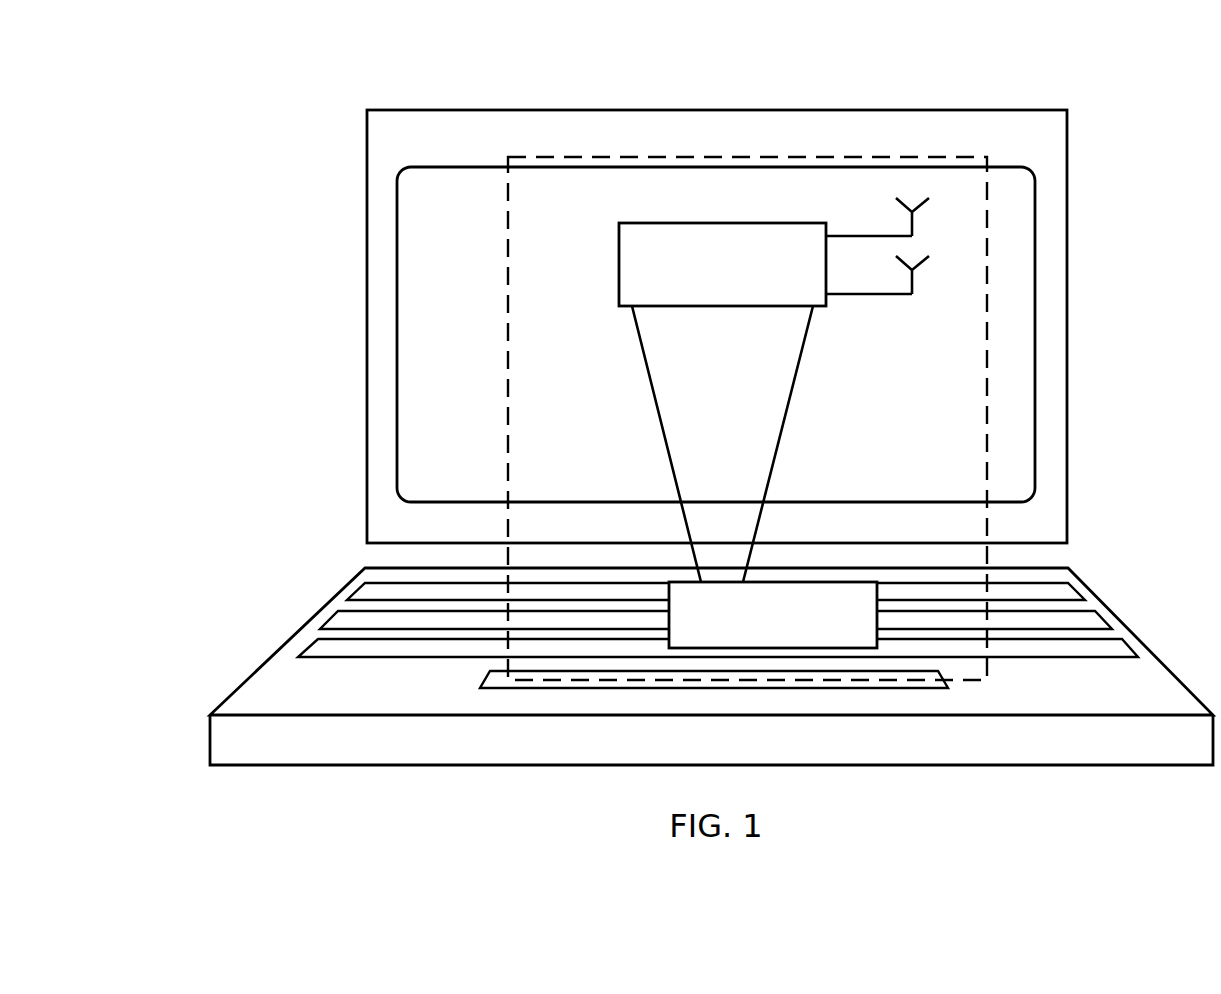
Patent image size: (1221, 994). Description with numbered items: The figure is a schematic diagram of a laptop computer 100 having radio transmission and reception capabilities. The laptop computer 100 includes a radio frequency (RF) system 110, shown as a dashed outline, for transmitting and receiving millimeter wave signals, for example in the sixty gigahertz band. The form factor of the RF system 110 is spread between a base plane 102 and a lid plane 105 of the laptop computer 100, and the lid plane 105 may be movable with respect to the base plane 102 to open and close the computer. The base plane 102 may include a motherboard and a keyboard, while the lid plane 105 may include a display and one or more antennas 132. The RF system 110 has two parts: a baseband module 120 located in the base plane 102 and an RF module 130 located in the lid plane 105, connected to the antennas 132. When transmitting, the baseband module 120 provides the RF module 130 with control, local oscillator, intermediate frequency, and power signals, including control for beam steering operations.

The laptop computer 100 is at (1130, 101).
The base plane 102 is at (1133, 630).
The lid plane 105 is at (896, 110).
The RF system 110 is at (710, 157).
The baseband module 120 is at (845, 582).
The RF module 130 is at (757, 223).
The antennas 132 is at (938, 259).